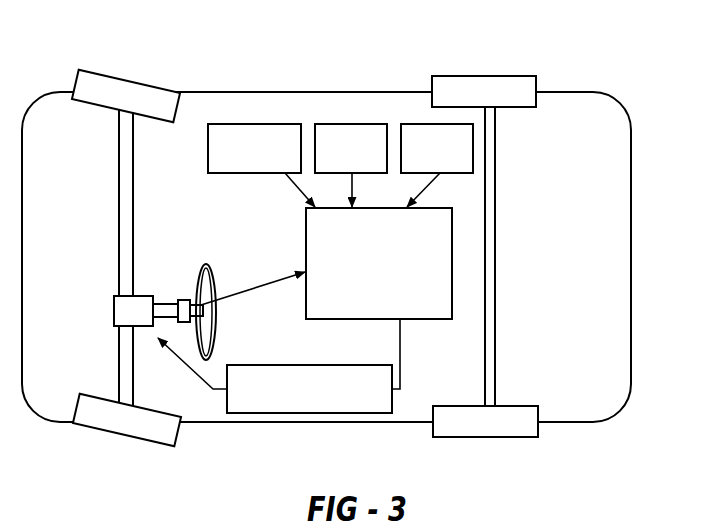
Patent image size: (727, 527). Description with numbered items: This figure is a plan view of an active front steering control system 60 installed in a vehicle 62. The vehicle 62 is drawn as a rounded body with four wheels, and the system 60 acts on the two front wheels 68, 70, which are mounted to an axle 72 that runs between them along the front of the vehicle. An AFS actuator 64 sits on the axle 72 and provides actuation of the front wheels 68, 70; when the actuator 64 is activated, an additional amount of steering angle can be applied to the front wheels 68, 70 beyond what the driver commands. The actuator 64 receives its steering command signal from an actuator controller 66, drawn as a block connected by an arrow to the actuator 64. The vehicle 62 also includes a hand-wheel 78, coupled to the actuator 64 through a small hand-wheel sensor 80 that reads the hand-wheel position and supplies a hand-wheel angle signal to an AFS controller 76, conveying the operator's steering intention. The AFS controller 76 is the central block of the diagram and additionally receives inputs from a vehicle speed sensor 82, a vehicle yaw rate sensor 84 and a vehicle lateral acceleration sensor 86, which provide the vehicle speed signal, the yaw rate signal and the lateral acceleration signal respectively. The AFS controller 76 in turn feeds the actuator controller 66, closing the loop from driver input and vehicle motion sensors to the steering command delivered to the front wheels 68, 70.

The AFS control system 60 is at (483, 54).
The vehicle 62 is at (632, 212).
The AFS actuator 64 is at (114, 312).
The actuator controller 66 is at (290, 414).
The front wheel 68 is at (125, 93).
The front wheel 70 is at (120, 418).
The axle 72 is at (122, 200).
The AFS controller 76 is at (430, 320).
The hand-wheel 78 is at (214, 271).
The steering angle sensor 80 is at (182, 298).
The vehicle speed sensor 82 is at (258, 124).
The vehicle yaw rate sensor 84 is at (363, 124).
The vehicle lateral acceleration sensor 86 is at (473, 148).